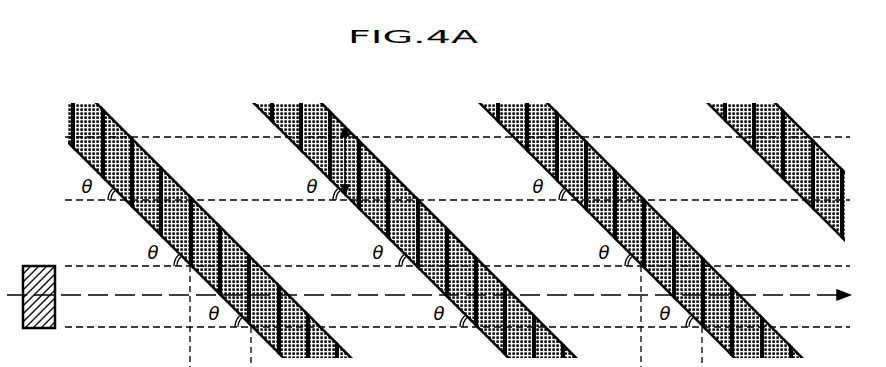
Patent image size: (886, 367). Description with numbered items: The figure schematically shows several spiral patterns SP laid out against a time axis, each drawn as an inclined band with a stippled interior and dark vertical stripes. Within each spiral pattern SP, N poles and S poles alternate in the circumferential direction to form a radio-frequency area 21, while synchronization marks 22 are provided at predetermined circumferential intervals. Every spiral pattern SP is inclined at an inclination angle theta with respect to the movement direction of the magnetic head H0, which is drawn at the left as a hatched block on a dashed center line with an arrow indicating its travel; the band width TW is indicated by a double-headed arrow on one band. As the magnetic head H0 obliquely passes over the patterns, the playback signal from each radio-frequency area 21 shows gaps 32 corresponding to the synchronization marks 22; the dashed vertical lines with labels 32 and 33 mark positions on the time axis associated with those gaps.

The radio-frequency area 21 is at (533, 157).
The synchronization marks 22 is at (557, 122).
The gaps 32 is at (431, 316).
The second pitch boundary 33 is at (502, 347).
The spiral pattern SP is at (101, 101).
The stripe width TW is at (365, 158).
The magnetic head H0 is at (40, 266).